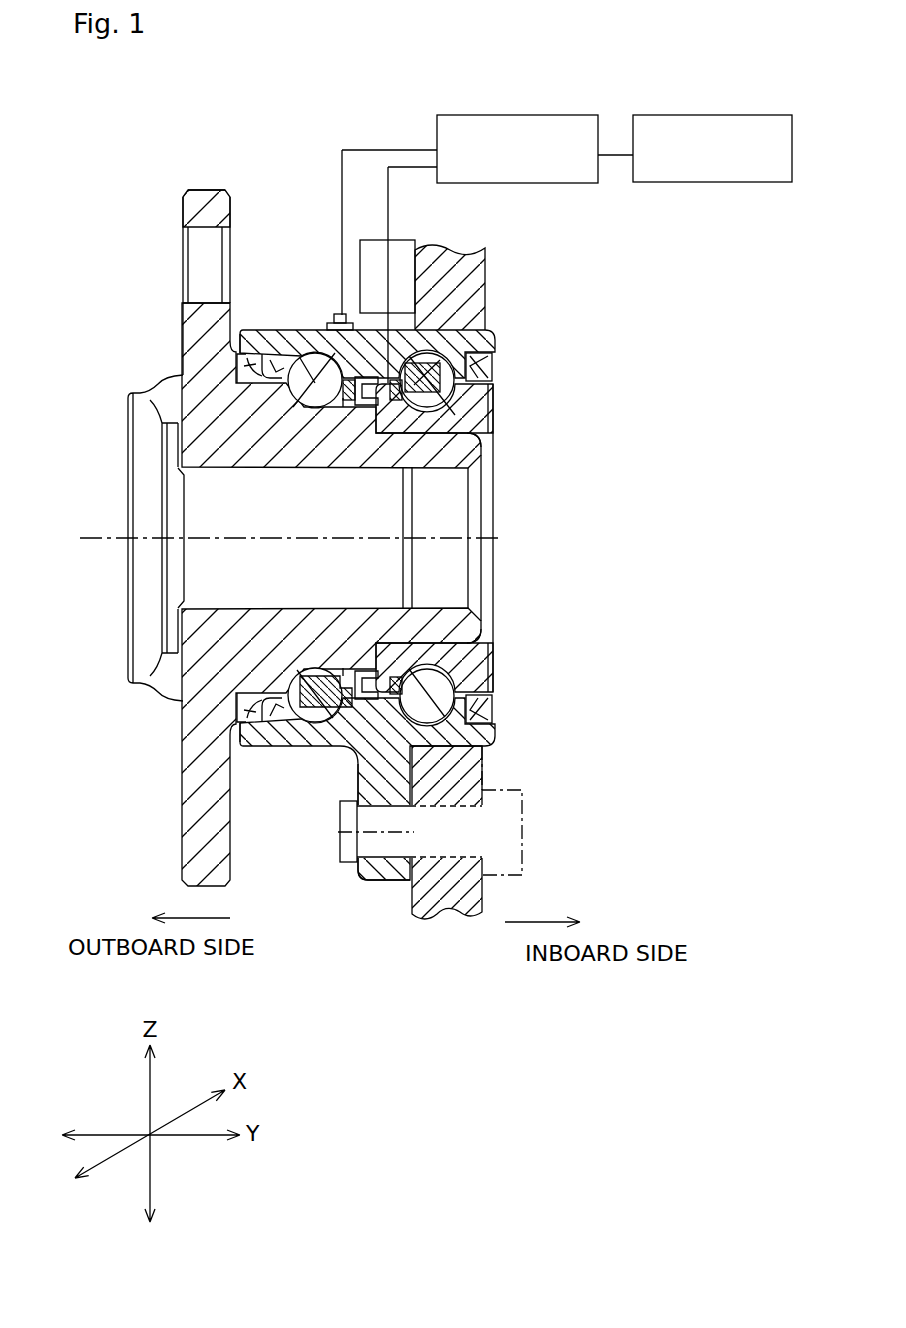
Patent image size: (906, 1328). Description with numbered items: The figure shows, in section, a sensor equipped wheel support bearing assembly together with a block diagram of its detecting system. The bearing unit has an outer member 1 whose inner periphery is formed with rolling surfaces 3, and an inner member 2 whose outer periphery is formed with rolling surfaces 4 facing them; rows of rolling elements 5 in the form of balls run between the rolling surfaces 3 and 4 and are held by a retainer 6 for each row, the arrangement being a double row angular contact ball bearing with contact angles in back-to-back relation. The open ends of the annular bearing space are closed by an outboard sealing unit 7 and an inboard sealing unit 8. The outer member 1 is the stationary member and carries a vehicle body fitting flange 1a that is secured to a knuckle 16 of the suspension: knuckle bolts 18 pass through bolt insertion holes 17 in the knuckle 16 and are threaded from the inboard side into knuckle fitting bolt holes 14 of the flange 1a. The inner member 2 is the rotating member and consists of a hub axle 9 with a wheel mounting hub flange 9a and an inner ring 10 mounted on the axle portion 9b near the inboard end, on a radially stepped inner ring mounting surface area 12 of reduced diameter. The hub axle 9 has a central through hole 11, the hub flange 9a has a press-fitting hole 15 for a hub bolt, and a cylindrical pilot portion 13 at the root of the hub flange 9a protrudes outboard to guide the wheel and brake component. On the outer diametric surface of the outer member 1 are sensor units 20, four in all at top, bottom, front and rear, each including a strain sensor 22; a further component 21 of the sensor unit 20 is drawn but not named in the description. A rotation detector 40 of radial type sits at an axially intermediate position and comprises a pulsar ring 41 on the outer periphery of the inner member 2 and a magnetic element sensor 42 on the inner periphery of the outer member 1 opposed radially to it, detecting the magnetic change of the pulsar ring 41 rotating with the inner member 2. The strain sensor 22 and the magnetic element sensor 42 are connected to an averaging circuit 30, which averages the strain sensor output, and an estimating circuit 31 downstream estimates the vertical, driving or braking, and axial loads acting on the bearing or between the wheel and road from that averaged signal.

The outer member 1 is at (325, 548).
The vehicle body fitting flange 1a is at (390, 881).
The inner member 2 is at (297, 494).
The rolling surfaces 3 is at (342, 636).
The rolling surfaces 4 is at (297, 700).
The rolling elements 5 is at (257, 730).
The retainer 6 is at (382, 683).
The outboard sealing unit 7 is at (243, 350).
The inboard sealing unit 8 is at (497, 360).
The hub axle 9 is at (300, 494).
The hub flange 9a is at (203, 190).
The axle portion 9b is at (470, 445).
The inner ring 10 is at (314, 538).
The through hole 11 is at (250, 604).
The inner ring mounting surface area 12 is at (494, 412).
The pilot portion 13 is at (132, 393).
The knuckle fitting bolt holes 14 is at (377, 860).
The press-fitting hole 15 is at (188, 237).
The knuckle 16 is at (453, 925).
The bolt insertion holes 17 is at (455, 860).
The knuckle bolts 18 is at (523, 850).
The sensor units 20 is at (380, 266).
The sensor mounting bolt 21 is at (332, 313).
The strain sensor 22 is at (348, 313).
The averaging circuit 30 is at (522, 115).
The estimating circuit 31 is at (698, 115).
The rotation detector 40 is at (275, 476).
The pulsar ring 41 is at (273, 357).
The magnetic element sensor 42 is at (313, 370).